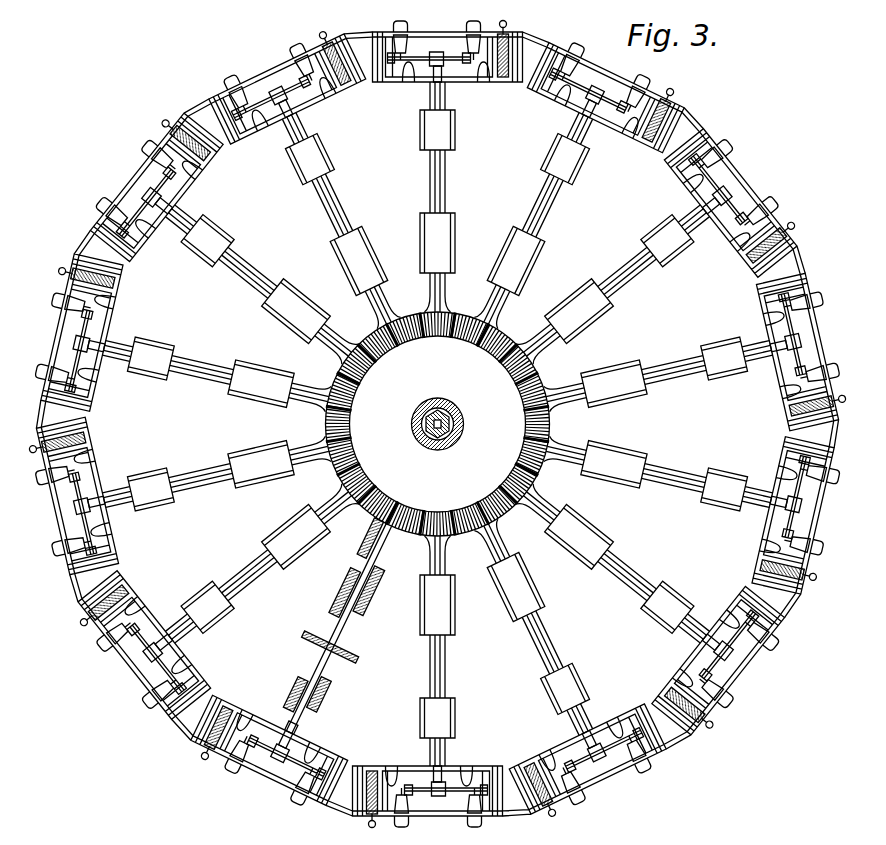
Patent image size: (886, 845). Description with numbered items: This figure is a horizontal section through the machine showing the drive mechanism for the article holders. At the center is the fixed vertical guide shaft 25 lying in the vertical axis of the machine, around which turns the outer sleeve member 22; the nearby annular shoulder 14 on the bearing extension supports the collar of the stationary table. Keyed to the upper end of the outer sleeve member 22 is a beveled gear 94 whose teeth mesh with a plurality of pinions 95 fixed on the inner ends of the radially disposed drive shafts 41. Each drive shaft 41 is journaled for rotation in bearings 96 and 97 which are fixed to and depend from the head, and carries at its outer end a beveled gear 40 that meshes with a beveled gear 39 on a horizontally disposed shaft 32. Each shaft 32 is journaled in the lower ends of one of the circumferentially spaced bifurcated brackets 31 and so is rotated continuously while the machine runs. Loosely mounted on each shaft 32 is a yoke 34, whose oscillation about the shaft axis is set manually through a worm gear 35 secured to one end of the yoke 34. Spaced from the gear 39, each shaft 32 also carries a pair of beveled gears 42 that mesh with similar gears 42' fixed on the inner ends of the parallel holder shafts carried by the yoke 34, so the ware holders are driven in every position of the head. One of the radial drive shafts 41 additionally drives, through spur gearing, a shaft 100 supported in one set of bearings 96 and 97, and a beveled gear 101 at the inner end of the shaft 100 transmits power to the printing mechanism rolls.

The annular shoulder 14 is at (415, 418).
The outer sleeve member 22 is at (437, 410).
The fixed vertical guide shaft 25 is at (432, 425).
The bifurcated bracket 31 is at (437, 424).
The horizontally disposed shaft 32 is at (437, 424).
The yoke 34 is at (438, 423).
The worm gear 35 is at (437, 425).
The beveled gear 39 is at (438, 424).
The beveled gear 40 is at (437, 424).
The drive shaft 41 is at (715, 421).
The beveled gear 42 is at (437, 424).
The beveled gear 42' is at (442, 438).
The beveled gear 94 is at (458, 471).
The pinion 95 is at (372, 445).
The bearing 96 is at (585, 275).
The bearing 97 is at (645, 210).
The shaft 100 is at (350, 620).
The beveled gear 101 is at (392, 527).